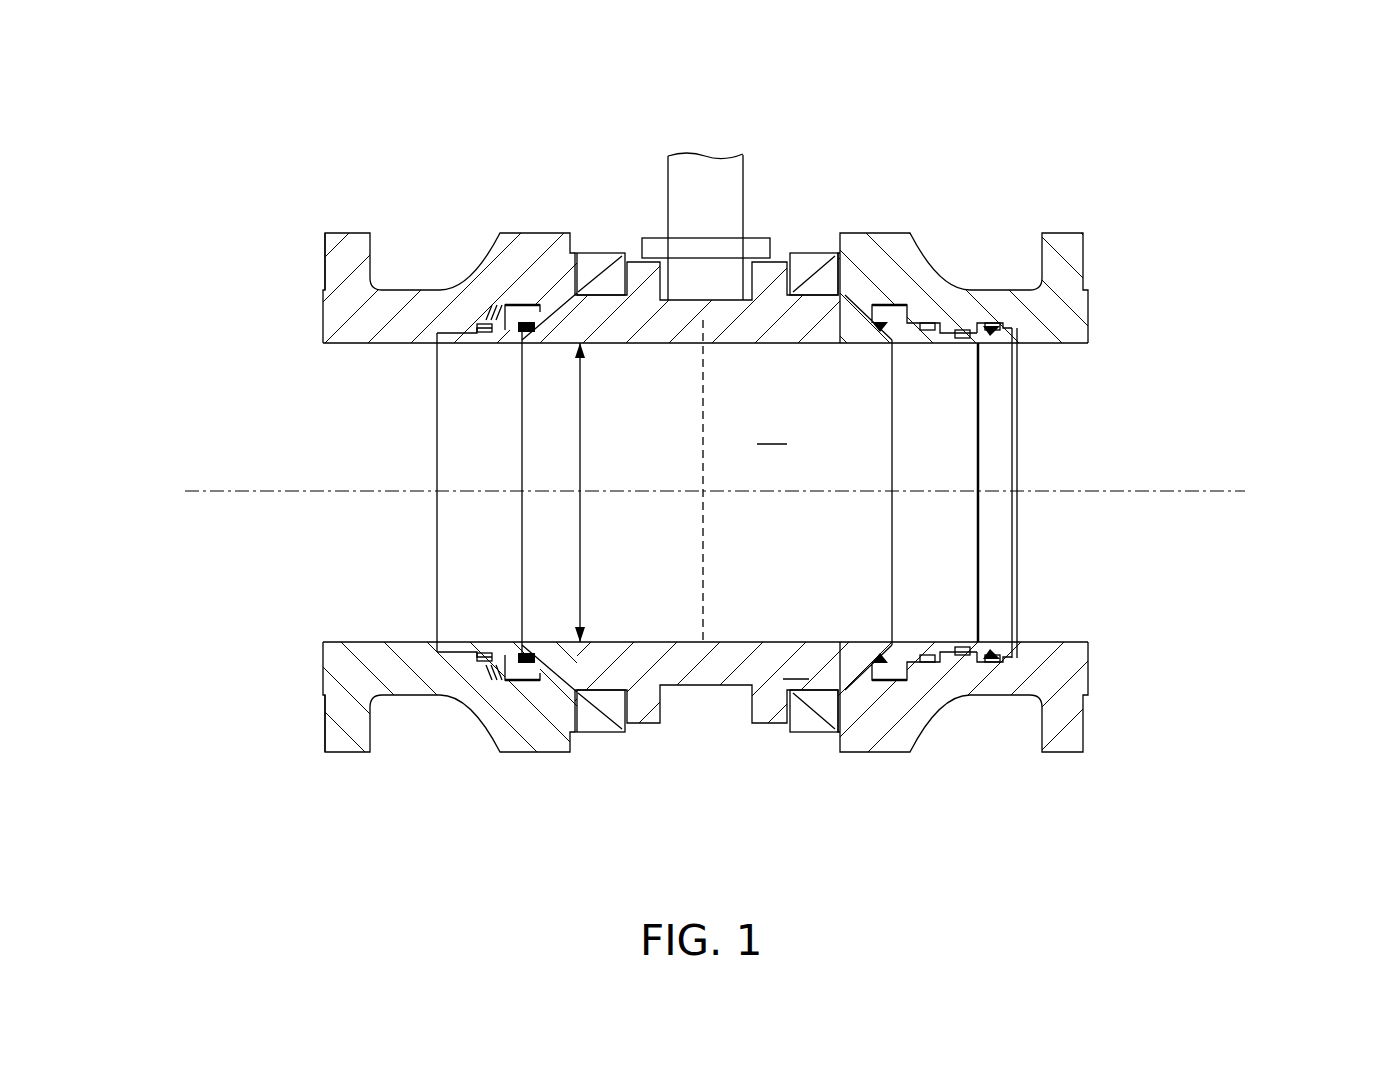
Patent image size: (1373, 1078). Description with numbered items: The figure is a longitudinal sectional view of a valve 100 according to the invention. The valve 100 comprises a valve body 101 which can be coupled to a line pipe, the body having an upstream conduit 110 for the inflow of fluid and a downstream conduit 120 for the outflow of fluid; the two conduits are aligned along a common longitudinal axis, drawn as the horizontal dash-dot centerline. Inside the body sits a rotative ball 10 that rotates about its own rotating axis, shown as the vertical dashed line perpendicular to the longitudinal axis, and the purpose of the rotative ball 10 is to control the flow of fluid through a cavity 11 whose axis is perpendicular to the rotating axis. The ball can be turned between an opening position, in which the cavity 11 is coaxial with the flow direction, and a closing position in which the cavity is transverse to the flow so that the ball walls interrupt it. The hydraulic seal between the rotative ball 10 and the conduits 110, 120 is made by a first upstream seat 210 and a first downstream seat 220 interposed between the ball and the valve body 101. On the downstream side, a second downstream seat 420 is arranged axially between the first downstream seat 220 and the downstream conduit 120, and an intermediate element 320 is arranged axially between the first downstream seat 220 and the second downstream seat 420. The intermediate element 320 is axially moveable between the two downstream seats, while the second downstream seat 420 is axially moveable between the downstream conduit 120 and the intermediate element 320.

The valve 100 is at (1182, 253).
The valve body 101 is at (325, 285).
The upstream conduit 110 is at (323, 457).
The downstream conduit 120 is at (1088, 555).
The rotative ball 10 is at (705, 492).
The cavity 11 is at (750, 492).
The first upstream seat 210 is at (520, 322).
The first downstream seat 220 is at (890, 318).
The intermediate element 320 is at (945, 323).
The second downstream seat 420 is at (990, 328).